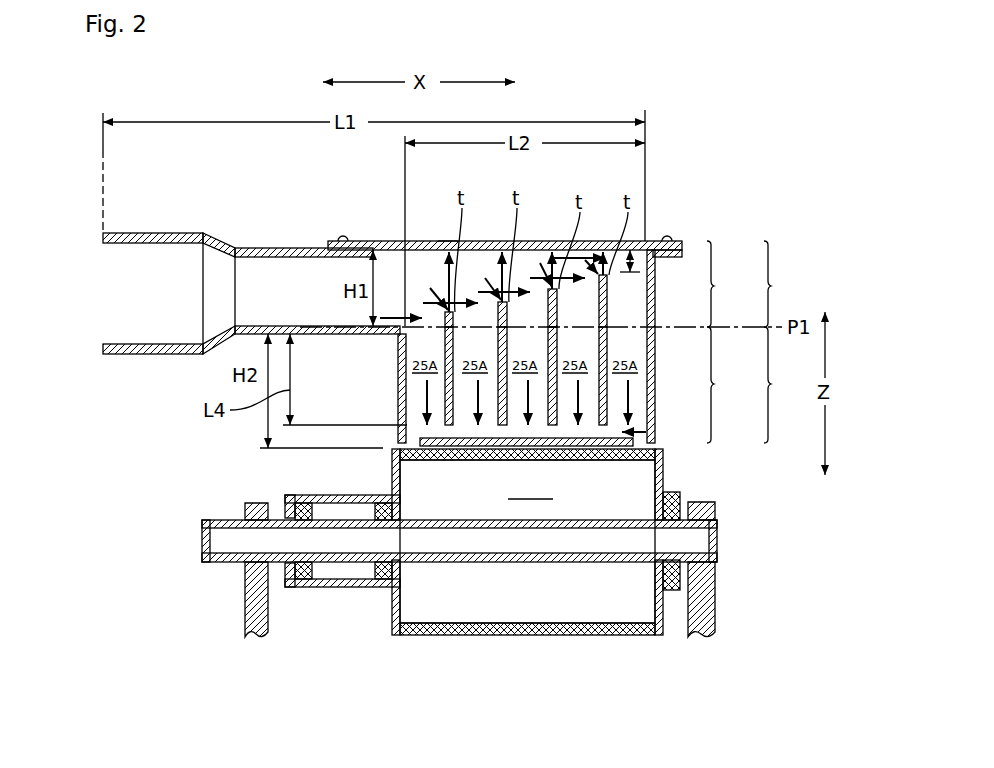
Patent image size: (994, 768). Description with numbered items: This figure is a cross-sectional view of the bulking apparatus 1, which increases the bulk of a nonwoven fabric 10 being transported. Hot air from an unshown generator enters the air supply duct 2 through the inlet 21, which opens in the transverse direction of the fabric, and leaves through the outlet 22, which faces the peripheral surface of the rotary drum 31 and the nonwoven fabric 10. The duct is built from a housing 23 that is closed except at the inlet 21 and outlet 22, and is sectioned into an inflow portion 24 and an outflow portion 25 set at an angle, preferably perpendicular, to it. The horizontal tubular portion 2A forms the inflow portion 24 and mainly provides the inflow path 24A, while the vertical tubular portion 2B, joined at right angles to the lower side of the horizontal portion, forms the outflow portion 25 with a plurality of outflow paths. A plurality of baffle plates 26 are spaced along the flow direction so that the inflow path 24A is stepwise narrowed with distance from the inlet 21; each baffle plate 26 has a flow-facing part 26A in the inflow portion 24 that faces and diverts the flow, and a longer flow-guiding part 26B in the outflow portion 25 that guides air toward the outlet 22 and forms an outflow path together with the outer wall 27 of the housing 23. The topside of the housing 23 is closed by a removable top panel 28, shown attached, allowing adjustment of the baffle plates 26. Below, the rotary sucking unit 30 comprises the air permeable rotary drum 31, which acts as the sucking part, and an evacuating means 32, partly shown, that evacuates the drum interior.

The bulking apparatus 1 is at (715, 163).
The air supply duct 2 is at (227, 250).
The horizontal tubular portion 2A is at (782, 284).
The vertical tubular portion 2B is at (782, 385).
The nonwoven fabric 10 is at (482, 572).
The inlet 21 is at (95, 300).
The outlet 22 is at (655, 432).
The housing 23 is at (307, 246).
The inflow portion 24 is at (724, 284).
The inflow path 24A is at (383, 240).
The outflow portion 25 is at (724, 385).
The baffle plate 26 is at (507, 296).
The flow-facing part 26A is at (445, 333).
The flow-guiding part 26B is at (445, 380).
The outer wall 27 is at (398, 405).
The top panel 28 is at (447, 240).
The rotary sucking unit 30 is at (407, 578).
The rotary drum 31 is at (450, 460).
The evacuating means 32 is at (222, 541).